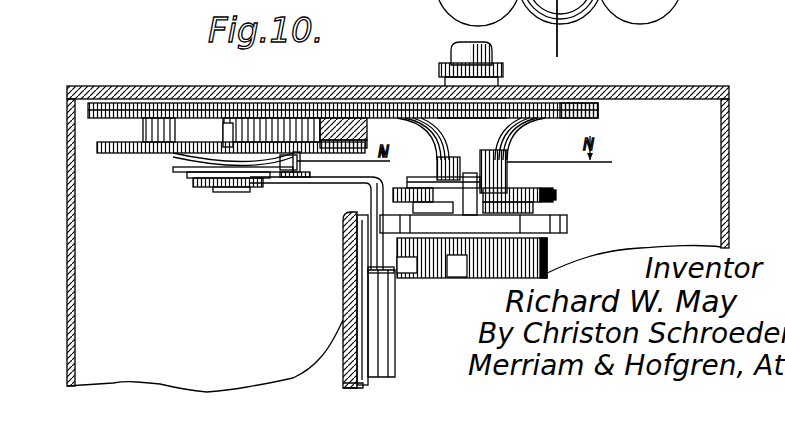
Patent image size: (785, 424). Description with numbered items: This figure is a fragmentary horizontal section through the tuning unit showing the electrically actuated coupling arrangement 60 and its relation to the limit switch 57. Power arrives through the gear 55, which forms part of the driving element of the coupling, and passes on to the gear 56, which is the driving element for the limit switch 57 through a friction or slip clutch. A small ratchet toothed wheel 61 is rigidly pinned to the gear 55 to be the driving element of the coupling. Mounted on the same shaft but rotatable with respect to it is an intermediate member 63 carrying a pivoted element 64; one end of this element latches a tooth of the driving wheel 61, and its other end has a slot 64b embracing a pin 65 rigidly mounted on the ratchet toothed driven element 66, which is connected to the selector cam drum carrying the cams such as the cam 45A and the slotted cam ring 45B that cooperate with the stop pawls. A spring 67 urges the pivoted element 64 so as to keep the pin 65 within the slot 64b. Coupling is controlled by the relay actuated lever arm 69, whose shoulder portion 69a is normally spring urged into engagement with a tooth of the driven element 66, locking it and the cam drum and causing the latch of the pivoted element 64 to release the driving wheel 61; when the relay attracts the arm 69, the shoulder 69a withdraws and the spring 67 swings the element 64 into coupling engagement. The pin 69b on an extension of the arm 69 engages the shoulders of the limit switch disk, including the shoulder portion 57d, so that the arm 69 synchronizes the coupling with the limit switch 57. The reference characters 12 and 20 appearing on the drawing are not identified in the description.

The dimension 12 is at (600, 42).
The housing 20 is at (584, 99).
The gear 55 is at (598, 112).
The gear 56 is at (142, 114).
The limit switch 57 is at (150, 152).
The shoulder portion 57d is at (226, 135).
The coupling arrangement 60 is at (558, 196).
The ratchet toothed wheel 61 is at (527, 126).
The intermediate member 63 is at (550, 191).
The pivoted element 64 is at (402, 188).
The slot 64b is at (480, 197).
The pin 65 is at (420, 185).
The ratchet toothed driven element 66 is at (567, 223).
The spring 67 is at (383, 222).
The lever arm 69 is at (371, 201).
The shoulder portion 69a is at (355, 267).
The pin 69b is at (313, 160).
The cam 45A is at (550, 250).
The cam ring 45B is at (548, 272).